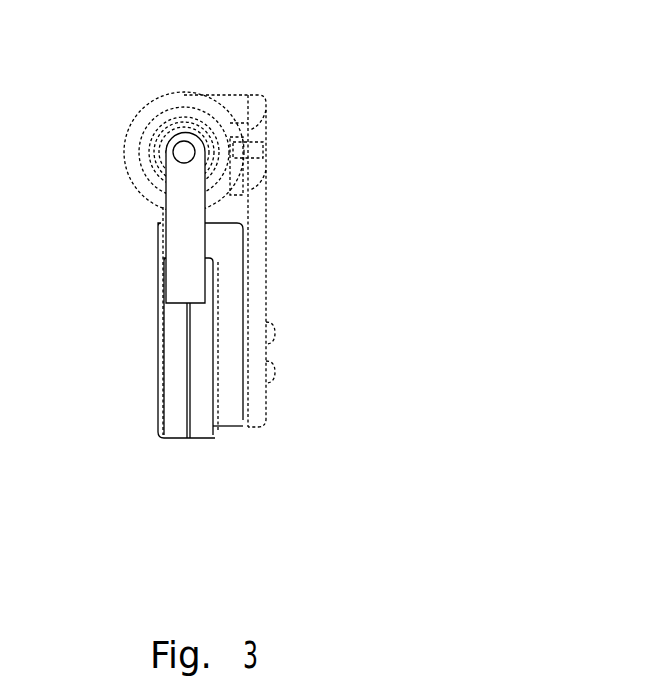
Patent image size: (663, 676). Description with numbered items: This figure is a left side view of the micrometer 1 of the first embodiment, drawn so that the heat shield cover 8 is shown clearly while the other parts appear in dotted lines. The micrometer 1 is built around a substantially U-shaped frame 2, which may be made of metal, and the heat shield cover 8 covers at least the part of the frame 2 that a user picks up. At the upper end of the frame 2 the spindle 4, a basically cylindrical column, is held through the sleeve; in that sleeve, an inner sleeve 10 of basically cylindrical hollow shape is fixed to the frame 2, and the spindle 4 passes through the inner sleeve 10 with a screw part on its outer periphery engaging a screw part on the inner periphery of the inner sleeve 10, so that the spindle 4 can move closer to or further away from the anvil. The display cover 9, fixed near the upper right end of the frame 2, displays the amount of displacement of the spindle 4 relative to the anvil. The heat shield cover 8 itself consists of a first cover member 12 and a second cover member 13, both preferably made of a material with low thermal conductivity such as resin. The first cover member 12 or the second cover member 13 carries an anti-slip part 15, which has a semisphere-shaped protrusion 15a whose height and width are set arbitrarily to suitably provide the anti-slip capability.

The micrometer 1 is at (339, 38).
The frame 2 is at (183, 245).
The spindle 4 is at (165, 152).
The heat shield cover 8 is at (139, 321).
The display cover 9 is at (257, 260).
The inner sleeve 10 is at (183, 141).
The first cover member 12 is at (202, 433).
The second cover member 13 is at (177, 433).
The anti-slip part 15 is at (140, 434).
The protrusion 15a is at (158, 362).